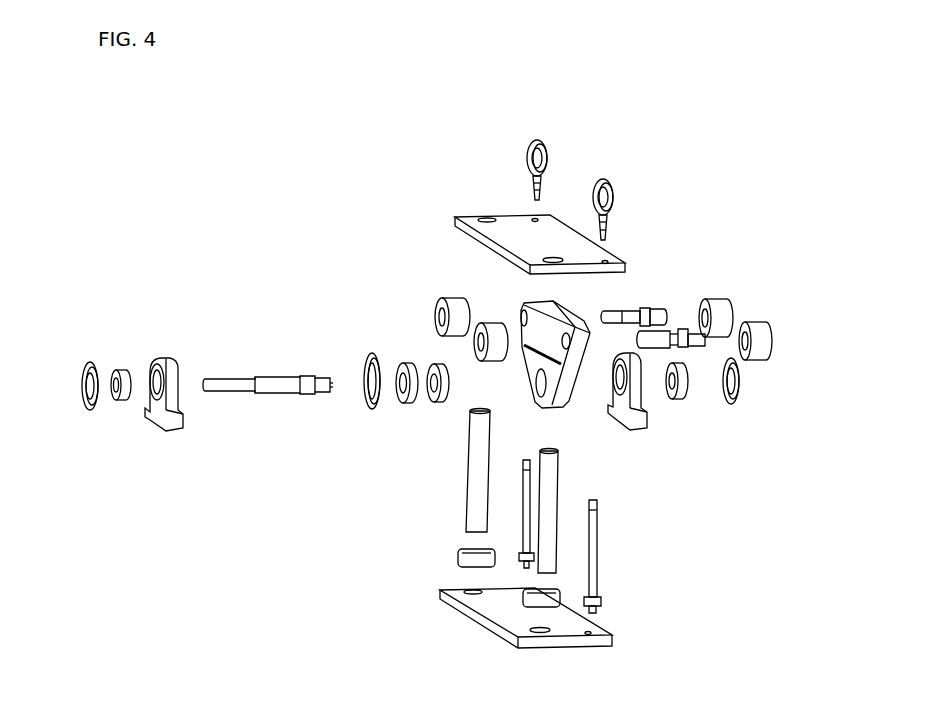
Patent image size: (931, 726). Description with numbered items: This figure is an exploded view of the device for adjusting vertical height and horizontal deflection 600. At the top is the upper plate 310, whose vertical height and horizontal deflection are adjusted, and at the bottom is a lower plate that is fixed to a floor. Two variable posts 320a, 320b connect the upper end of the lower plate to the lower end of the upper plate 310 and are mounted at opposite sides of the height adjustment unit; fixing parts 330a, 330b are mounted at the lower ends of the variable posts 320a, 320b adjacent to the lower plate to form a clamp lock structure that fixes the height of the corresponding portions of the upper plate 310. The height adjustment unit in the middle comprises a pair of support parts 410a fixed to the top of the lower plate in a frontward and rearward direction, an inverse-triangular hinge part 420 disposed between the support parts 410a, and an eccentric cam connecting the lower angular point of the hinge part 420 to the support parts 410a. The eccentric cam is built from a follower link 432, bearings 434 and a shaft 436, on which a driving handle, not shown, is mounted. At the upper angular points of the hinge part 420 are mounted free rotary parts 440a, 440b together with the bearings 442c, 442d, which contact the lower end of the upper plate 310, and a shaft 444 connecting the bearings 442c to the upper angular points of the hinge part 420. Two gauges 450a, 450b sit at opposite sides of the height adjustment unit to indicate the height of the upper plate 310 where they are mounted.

The device for adjusting vertical height and horizontal deflection 600 is at (186, 166).
The upper plate 310 is at (573, 248).
The variable post 320a is at (475, 498).
The variable post 320b is at (548, 503).
The fixing part 330a is at (473, 563).
The fixing part 330b is at (540, 597).
The support part 410a is at (148, 417).
The inverse-triangular hinge part 420 is at (567, 382).
The follower link 432 is at (364, 398).
The bearings 434 is at (408, 402).
The shaft 436 is at (233, 382).
The free rotary part 440a is at (453, 315).
The free rotary part 440b is at (490, 342).
The bearings 442c is at (722, 308).
The bearings 442d is at (760, 342).
The shaft 444 is at (658, 311).
The gauge 450a is at (547, 155).
The gauge 450b is at (612, 205).